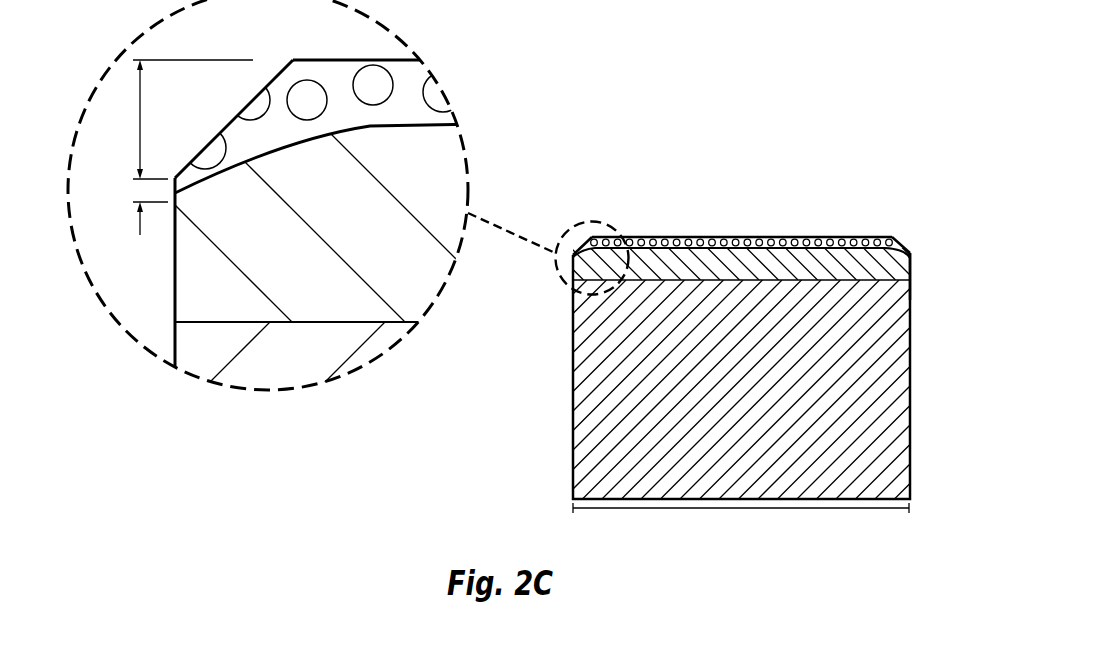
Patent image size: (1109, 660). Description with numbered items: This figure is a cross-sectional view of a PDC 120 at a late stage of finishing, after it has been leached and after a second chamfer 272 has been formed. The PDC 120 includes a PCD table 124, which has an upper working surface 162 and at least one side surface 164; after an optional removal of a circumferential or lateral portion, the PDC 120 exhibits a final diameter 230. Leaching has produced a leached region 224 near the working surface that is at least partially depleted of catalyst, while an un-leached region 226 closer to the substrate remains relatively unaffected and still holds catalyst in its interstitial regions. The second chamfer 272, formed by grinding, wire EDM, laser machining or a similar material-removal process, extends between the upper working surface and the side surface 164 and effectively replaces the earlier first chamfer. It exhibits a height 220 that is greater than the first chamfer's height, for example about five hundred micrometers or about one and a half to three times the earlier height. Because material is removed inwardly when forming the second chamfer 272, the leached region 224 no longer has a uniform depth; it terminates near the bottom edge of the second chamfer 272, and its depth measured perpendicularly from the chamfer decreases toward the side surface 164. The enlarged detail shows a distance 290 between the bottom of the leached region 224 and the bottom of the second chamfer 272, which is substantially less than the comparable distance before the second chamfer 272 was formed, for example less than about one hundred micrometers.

The PDC 120 is at (674, 210).
The PCD table 124 is at (915, 192).
The working surface 162 is at (835, 237).
The side surface 164 is at (912, 276).
The leached region 224 is at (310, 74).
The un-leached region 226 is at (862, 268).
The second chamfer 272 is at (286, 63).
The height 220 is at (187, 119).
The distance 290 is at (130, 207).
The final diameter 230 is at (767, 510).